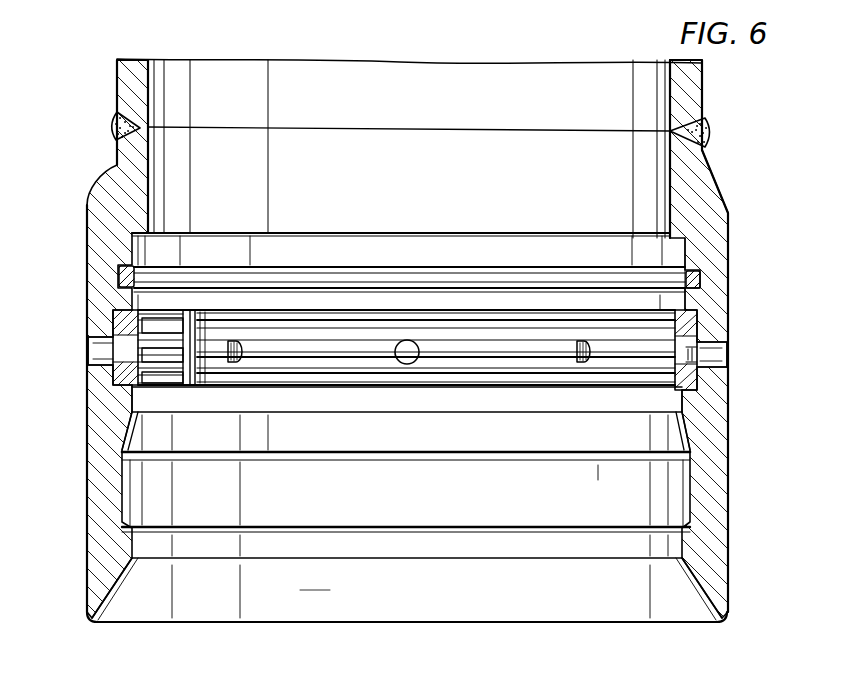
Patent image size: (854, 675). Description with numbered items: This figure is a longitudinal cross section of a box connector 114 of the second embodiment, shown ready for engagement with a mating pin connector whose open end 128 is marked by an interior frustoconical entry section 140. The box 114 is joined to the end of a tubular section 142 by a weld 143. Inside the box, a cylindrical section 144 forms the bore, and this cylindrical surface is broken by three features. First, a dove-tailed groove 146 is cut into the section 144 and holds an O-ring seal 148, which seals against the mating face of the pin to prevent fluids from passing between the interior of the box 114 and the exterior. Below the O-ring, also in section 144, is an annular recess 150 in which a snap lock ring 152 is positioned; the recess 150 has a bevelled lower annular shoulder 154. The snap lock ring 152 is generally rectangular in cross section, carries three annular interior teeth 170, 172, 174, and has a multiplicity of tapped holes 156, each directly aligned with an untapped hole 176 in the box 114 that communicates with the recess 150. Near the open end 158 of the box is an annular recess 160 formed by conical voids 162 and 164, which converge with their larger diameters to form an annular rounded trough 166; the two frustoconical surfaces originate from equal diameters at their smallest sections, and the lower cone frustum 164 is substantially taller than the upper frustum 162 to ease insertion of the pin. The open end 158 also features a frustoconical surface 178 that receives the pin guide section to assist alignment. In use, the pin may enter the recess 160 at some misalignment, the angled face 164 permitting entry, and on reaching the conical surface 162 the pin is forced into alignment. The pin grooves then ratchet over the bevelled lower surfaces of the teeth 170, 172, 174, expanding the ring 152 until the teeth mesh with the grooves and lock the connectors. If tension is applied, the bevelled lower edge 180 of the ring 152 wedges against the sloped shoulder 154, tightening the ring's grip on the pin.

The box connector 114 is at (705, 213).
The open end 128 is at (401, 631).
The frustoconical entry section 140 is at (214, 674).
The tubular section 142 is at (705, 88).
The weld 143 is at (707, 131).
The cylindrical section 144 is at (162, 232).
The dove-tailed groove 146 is at (118, 272).
The O-ring seal 148 is at (698, 281).
The annular recess 150 is at (113, 322).
The snap lock ring 152 is at (698, 383).
The bevelled lower annular shoulder 154 is at (120, 385).
The tapped holes 156 is at (410, 340).
The open end 158 is at (653, 627).
The annular recess 160 is at (426, 517).
The conical void 162 is at (688, 440).
The conical void 164 is at (690, 512).
The annular rounded trough 166 is at (692, 467).
The interior tooth 170 is at (253, 372).
The interior tooth 172 is at (332, 345).
The interior tooth 174 is at (510, 320).
The untapped hole 176 is at (727, 348).
The frustoconical surface 178 is at (112, 600).
The bevelled lower edge 180 is at (113, 372).